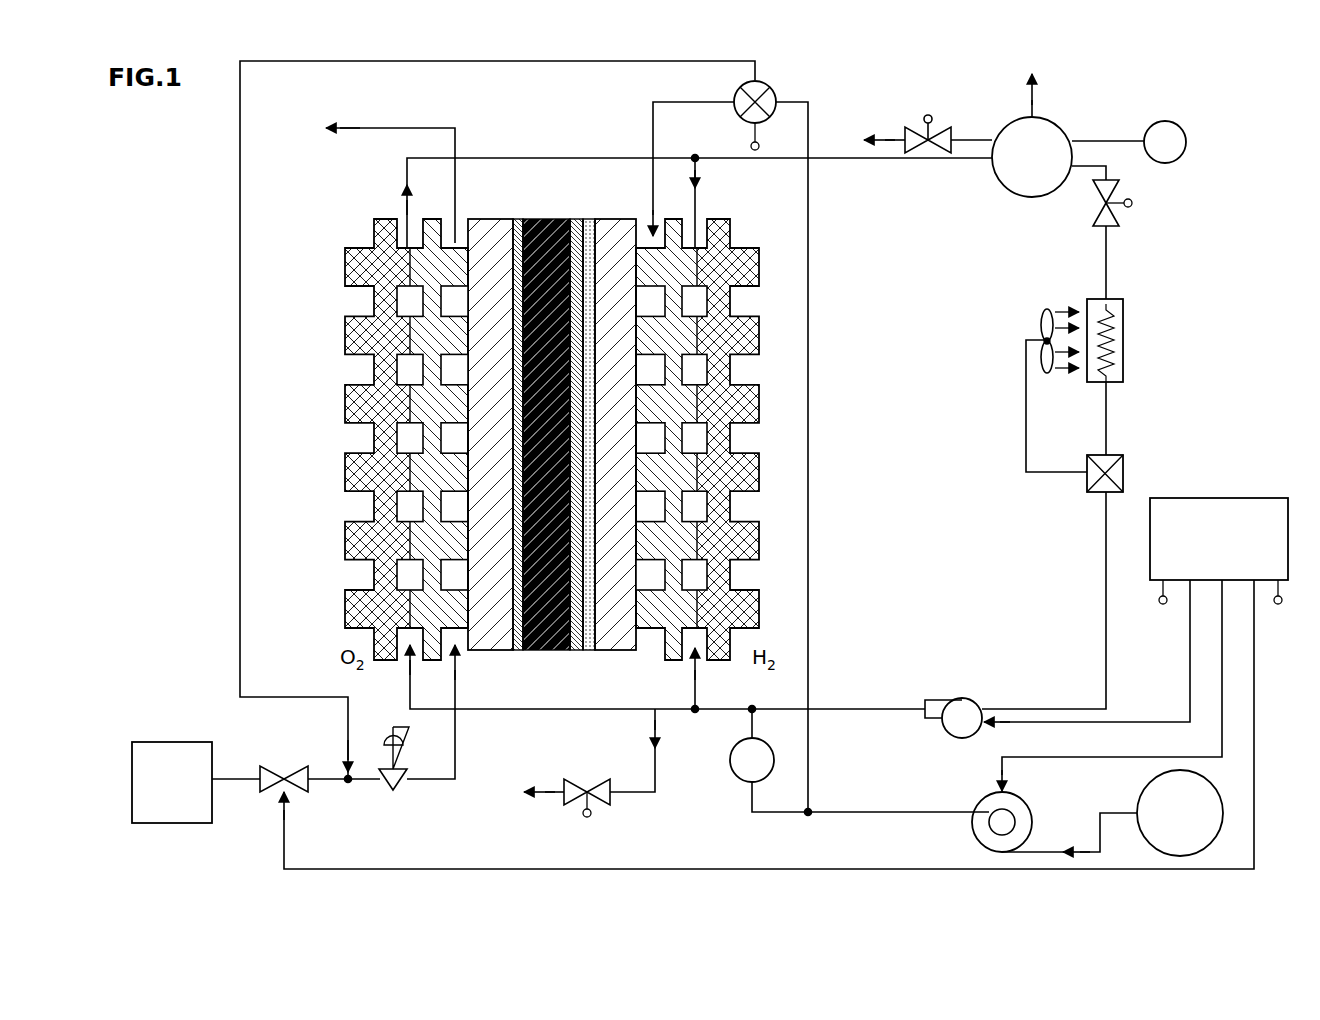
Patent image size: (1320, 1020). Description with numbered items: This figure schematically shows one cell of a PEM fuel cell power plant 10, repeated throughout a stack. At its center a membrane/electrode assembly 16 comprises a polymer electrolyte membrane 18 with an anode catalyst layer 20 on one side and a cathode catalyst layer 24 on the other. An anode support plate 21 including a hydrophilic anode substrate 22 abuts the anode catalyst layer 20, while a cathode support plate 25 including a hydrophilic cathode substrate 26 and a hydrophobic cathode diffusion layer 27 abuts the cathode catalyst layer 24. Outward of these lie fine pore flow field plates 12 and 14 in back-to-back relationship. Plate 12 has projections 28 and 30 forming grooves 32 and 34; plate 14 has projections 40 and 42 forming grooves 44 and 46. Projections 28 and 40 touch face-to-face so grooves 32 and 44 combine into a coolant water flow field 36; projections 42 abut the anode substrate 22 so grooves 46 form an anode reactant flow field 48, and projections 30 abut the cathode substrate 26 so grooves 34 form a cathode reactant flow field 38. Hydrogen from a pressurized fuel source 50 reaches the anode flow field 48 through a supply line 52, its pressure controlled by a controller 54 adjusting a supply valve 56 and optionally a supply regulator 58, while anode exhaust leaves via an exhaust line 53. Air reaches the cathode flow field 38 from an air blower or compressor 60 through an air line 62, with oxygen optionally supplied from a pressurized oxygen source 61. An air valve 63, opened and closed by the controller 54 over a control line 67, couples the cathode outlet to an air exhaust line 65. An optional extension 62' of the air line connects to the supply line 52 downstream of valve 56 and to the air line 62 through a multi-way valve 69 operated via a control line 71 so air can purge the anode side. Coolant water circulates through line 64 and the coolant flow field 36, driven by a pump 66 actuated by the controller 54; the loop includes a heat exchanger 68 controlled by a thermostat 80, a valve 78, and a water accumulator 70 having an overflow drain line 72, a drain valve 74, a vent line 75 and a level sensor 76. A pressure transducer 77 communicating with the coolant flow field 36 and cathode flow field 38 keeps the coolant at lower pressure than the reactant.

The fuel cell power plant system 10 is at (1232, 127).
The flow field plate 12 is at (356, 230).
The flow field plate 14 is at (432, 200).
The membrane/electrode assembly 16 is at (552, 654).
The polymer electrolyte membrane 18 is at (548, 218).
The anode catalyst layer 20 is at (530, 651).
The anode support plate 21 is at (496, 215).
The anode substrate 22 is at (516, 651).
The cathode catalyst layer 24 is at (576, 651).
The cathode support plate 25 is at (605, 215).
The cathode substrate 26 is at (590, 651).
The cathode diffusion layer 27 is at (584, 216).
The projections 28 is at (410, 327).
The projections 30 is at (347, 480).
The grooves 32 is at (410, 462).
The grooves 34 is at (374, 457).
The coolant water flow field 36 is at (401, 585).
The cathode reactant flow field 38 is at (352, 302).
The projections 40 is at (697, 246).
The projections 42 is at (444, 245).
The grooves 44 is at (410, 395).
The grooves 46 is at (440, 390).
The anode reactant flow field 48 is at (445, 311).
The fuel source 50 is at (178, 742).
The supply line 52 is at (425, 782).
The exhaust line 53 is at (368, 128).
The controller 54 is at (1222, 498).
The supply valve 56 is at (284, 768).
The supply regulator 58 is at (408, 727).
The air blower or compressor 60 is at (972, 832).
The pressurized oxygen source 61 is at (1140, 787).
The air line 62 is at (1072, 600).
The extension of air line 62' is at (475, 420).
The air valve 63 is at (581, 788).
The coolant water line 64 is at (1111, 262).
The air exhaust line 65 is at (546, 798).
The pump 66 is at (957, 704).
The control line 67 is at (1282, 604).
The heat exchanger 68 is at (1125, 298).
The multi-way valve 69 is at (770, 92).
The water accumulator 70 is at (1008, 125).
The control line 71 is at (760, 146).
The overflow drain line 72 is at (977, 140).
The drain valve 74 is at (926, 120).
The vent line 75 is at (1035, 106).
The level sensor 76 is at (1170, 122).
The pressure transducer 77 is at (735, 774).
The valve 78 is at (1128, 214).
The thermostat 80 is at (1125, 456).